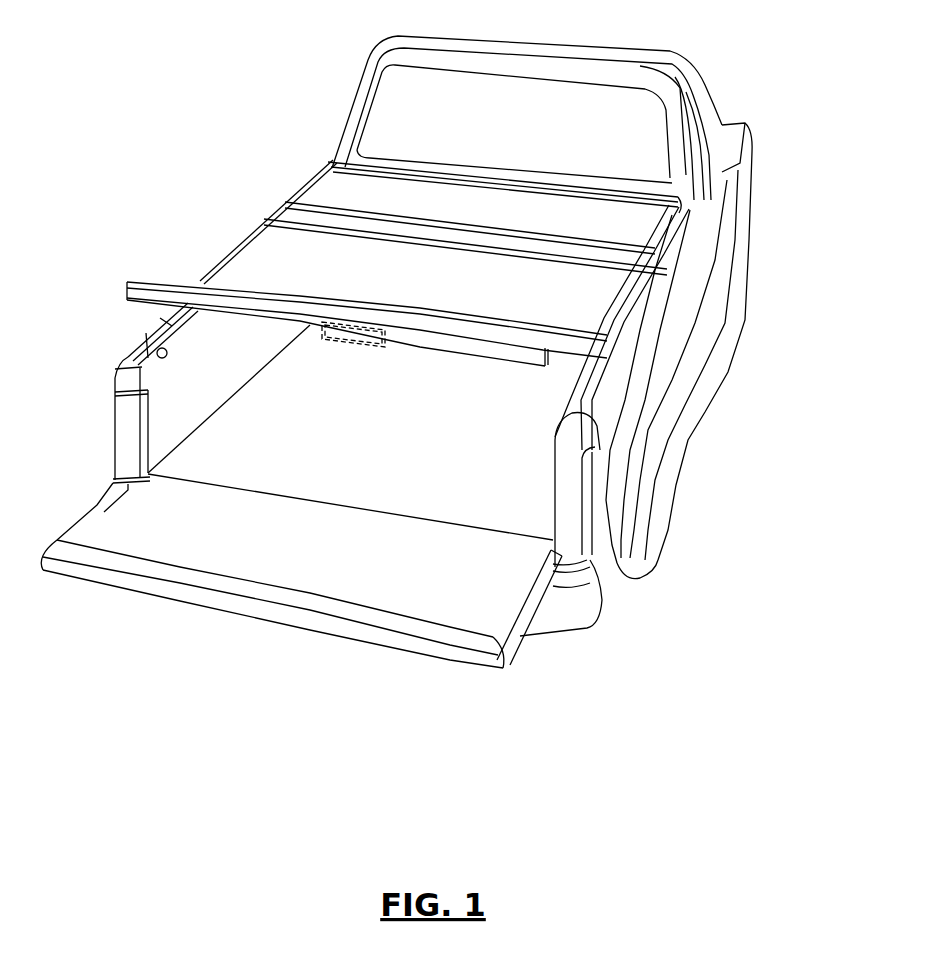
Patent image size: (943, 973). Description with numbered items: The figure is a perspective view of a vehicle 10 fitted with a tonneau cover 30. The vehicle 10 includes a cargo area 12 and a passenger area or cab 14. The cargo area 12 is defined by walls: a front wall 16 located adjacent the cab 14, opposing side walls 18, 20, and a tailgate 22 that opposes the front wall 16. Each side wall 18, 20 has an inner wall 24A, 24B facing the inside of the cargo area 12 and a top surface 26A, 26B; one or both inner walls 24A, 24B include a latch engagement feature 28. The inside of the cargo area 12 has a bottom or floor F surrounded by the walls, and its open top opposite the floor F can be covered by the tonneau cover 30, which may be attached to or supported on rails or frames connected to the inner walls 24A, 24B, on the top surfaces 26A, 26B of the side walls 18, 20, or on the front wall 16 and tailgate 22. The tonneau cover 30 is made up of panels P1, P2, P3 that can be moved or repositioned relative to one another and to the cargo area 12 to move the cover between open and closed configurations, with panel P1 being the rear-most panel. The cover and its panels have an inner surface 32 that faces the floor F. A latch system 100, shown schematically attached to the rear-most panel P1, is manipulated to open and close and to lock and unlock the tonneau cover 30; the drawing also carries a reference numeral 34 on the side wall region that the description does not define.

The vehicle 10 is at (288, 43).
The cargo area 12 is at (345, 425).
The passenger area or cab 14 is at (718, 236).
The front wall 16 is at (655, 193).
The side wall 18 is at (107, 397).
The side wall 20 is at (618, 468).
The tailgate 22 is at (188, 606).
The inner wall 24A is at (180, 408).
The inner wall 24B is at (555, 498).
The top surface 26A is at (152, 338).
The top surface 26B is at (568, 432).
The latch engagement feature 28 is at (157, 353).
The tonneau cover 30 is at (409, 288).
The inner surface 32 is at (566, 362).
The side wall inner surface 34 is at (600, 297).
The latch system 100 is at (365, 350).
The panel P1 is at (193, 286).
The panel P2 is at (257, 257).
The panel P3 is at (342, 192).
The floor F is at (437, 448).